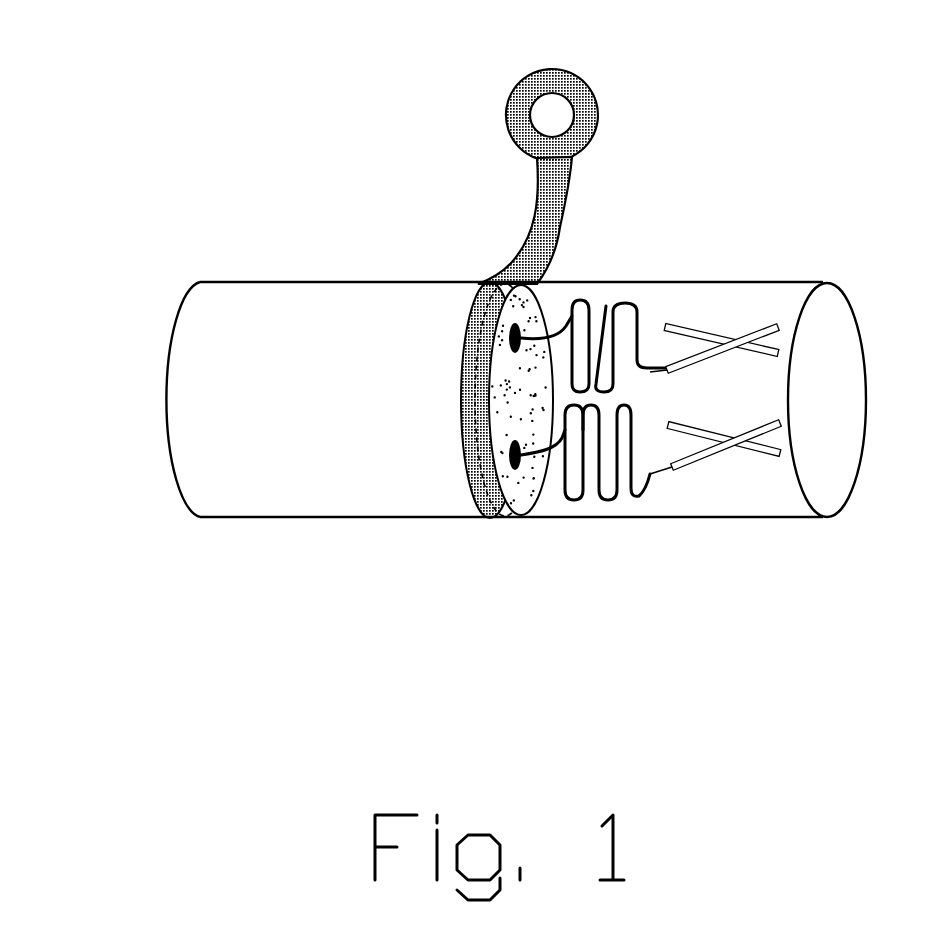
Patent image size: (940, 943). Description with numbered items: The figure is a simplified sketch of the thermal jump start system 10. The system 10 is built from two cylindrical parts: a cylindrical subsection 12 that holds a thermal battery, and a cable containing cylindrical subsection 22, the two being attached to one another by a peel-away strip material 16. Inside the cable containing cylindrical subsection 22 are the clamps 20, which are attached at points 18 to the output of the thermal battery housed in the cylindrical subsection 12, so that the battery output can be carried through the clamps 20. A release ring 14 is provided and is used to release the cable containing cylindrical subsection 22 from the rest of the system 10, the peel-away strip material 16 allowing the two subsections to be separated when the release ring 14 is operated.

The system 10 is at (530, 360).
The cylindrical subsection 12 is at (330, 335).
The release ring 14 is at (522, 92).
The peel-away strip material 16 is at (532, 220).
The attachment points 18 is at (533, 427).
The clamps 20 is at (762, 413).
The cable containing cylindrical subsection 22 is at (715, 520).